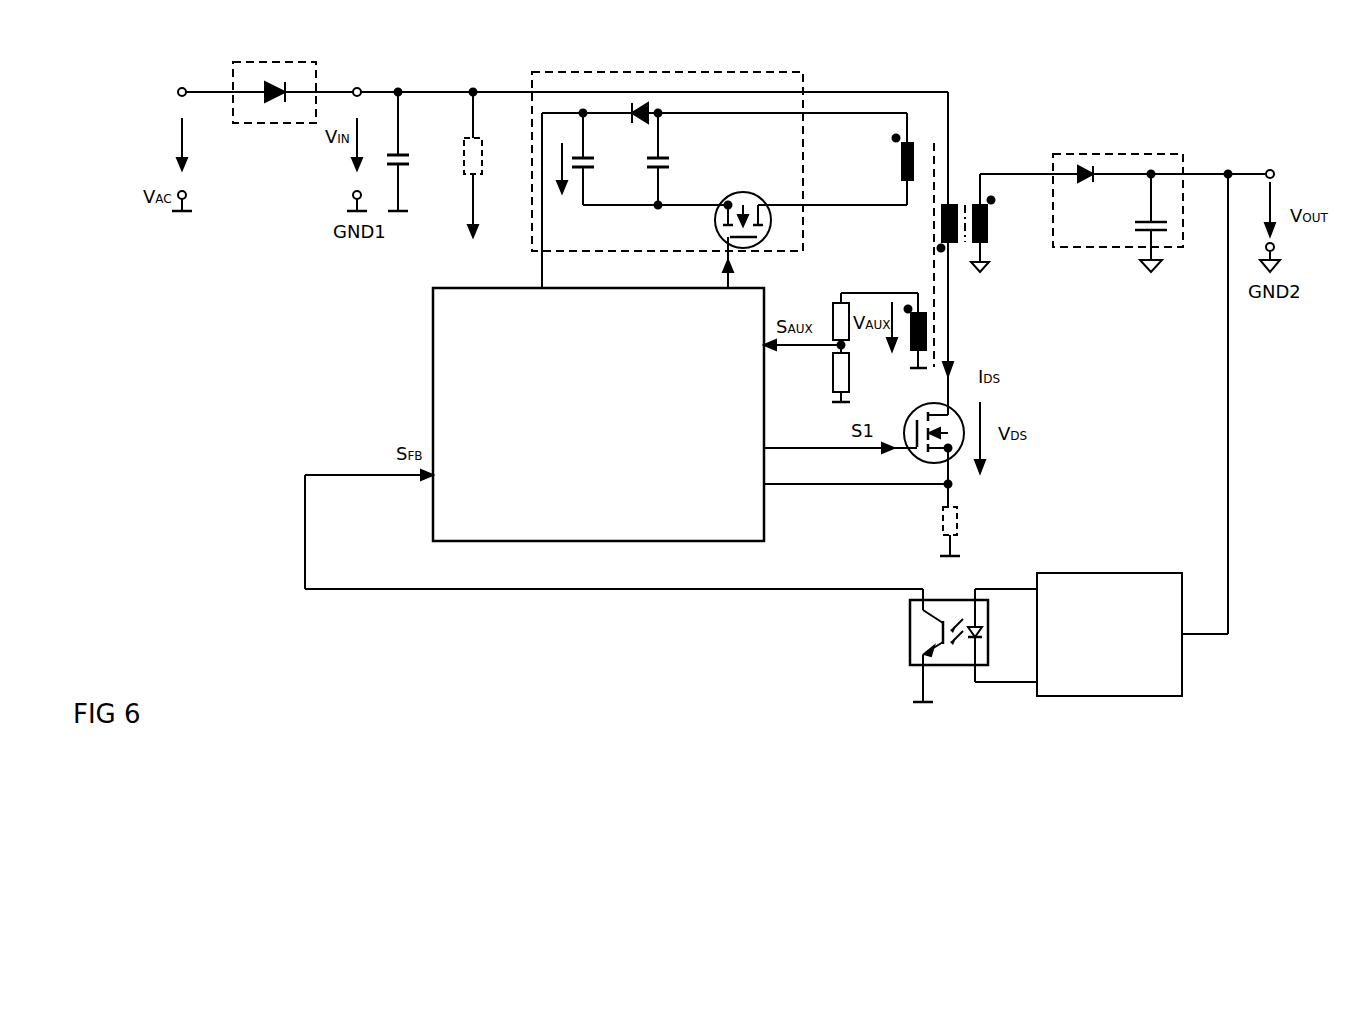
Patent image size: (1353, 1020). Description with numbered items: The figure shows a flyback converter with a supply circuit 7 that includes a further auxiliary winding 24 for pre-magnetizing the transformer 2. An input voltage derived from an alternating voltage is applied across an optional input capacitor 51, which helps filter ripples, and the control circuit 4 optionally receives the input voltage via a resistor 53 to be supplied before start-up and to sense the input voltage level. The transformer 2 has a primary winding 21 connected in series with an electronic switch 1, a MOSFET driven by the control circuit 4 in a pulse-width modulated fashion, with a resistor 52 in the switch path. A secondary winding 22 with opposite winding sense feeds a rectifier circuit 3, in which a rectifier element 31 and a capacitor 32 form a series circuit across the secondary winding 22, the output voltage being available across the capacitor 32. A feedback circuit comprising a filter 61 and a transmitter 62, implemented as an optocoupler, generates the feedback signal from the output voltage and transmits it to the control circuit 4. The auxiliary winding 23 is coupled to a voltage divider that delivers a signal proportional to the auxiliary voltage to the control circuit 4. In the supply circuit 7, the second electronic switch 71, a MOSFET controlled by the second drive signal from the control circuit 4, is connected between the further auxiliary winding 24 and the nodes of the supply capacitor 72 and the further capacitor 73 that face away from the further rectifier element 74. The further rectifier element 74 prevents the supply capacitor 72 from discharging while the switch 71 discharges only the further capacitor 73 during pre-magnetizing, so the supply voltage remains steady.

The electronic switch 1 is at (908, 410).
The transformer 2 is at (944, 252).
The primary winding 21 is at (953, 247).
The secondary winding 22 is at (987, 237).
The auxiliary winding 23 is at (907, 348).
The further auxiliary winding 24 is at (902, 168).
The rectifier circuit 3 is at (1123, 184).
The rectifier element 31 is at (1088, 191).
The capacitor 32 is at (1136, 223).
The control circuit 4 is at (433, 385).
The input capacitor 51 is at (410, 161).
The sense resistor 52 is at (960, 523).
The resistor 53 is at (482, 161).
The filter 61 is at (1117, 573).
The transmitter 62 is at (907, 638).
The supply circuit 7 is at (719, 160).
The second electronic switch 71 is at (802, 226).
The supply capacitor 72 is at (592, 159).
The further capacitor 73 is at (666, 159).
The further rectifier element 74 is at (635, 126).